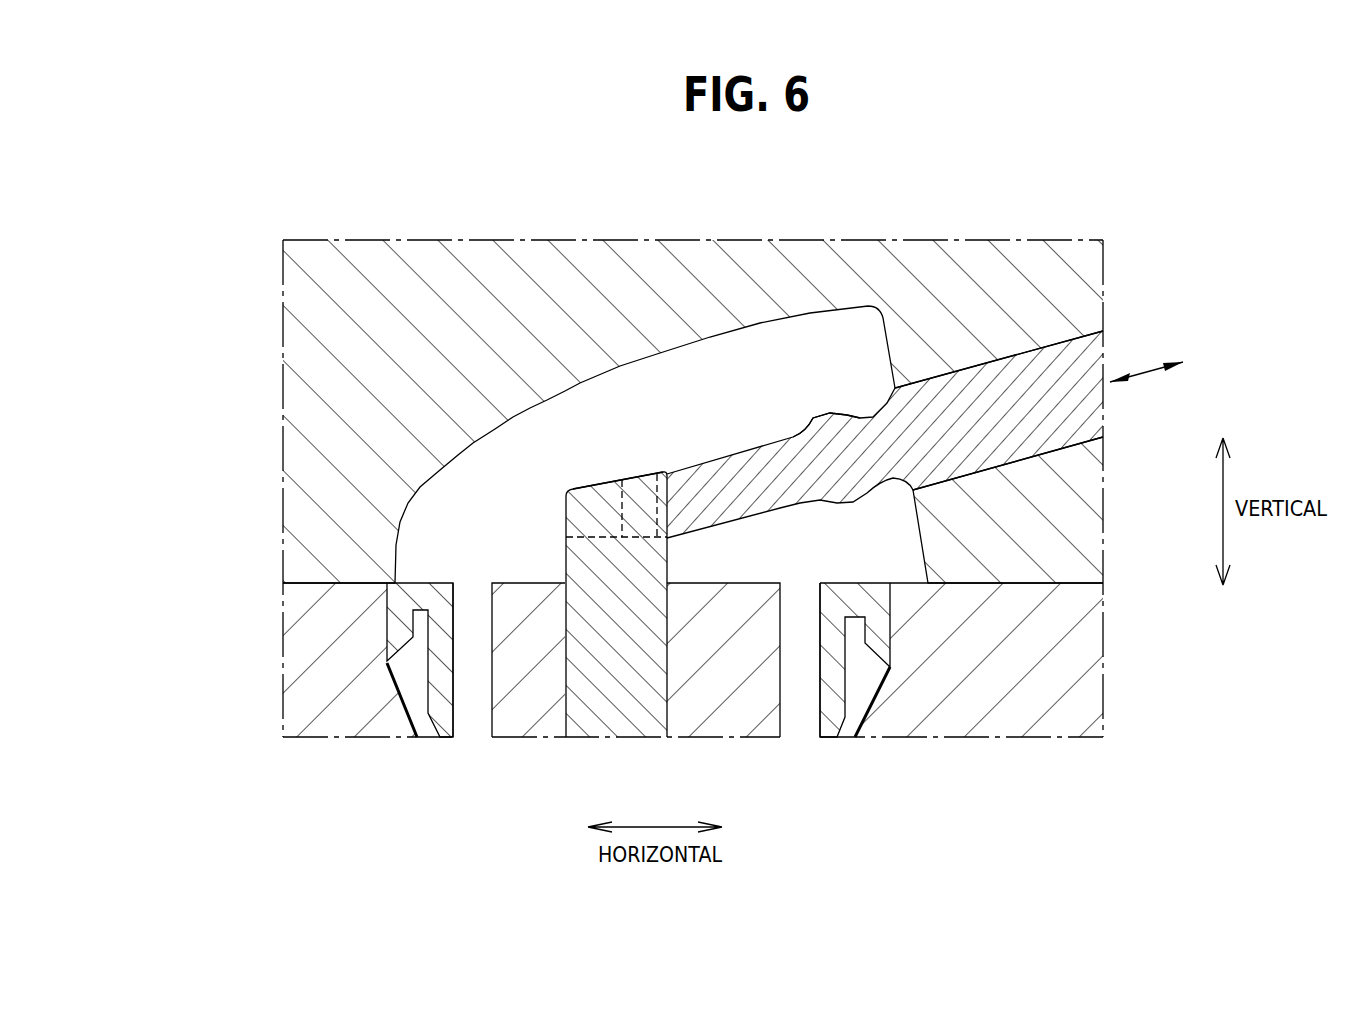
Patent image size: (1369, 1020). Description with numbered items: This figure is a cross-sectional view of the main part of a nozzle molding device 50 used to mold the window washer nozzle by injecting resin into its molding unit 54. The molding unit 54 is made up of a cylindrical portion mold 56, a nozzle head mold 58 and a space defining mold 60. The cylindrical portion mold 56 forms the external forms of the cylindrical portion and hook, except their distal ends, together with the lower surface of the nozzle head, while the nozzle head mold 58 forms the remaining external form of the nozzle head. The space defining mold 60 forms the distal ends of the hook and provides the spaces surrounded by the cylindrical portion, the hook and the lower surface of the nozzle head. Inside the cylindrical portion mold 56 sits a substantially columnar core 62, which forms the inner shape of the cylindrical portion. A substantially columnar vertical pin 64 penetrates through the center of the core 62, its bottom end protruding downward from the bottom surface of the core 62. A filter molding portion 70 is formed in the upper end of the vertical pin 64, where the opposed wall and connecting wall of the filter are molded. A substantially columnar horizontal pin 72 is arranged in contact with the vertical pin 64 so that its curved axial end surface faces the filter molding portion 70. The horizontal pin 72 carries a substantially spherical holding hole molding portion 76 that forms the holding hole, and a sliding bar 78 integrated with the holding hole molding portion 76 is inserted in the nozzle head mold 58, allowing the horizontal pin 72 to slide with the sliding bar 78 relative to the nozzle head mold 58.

The nozzle molding device 50 is at (393, 195).
The molding unit 54 is at (212, 542).
The nozzle head mold 58 is at (295, 553).
The space defining mold 60 is at (383, 602).
The cylindrical portion mold 56 is at (312, 646).
The core 62 is at (512, 718).
The vertical pin 64 is at (669, 551).
The filter molding portion 70 is at (604, 487).
The horizontal pin 72 is at (737, 452).
The holding hole molding portion 76 is at (808, 414).
The sliding bar 78 is at (972, 363).